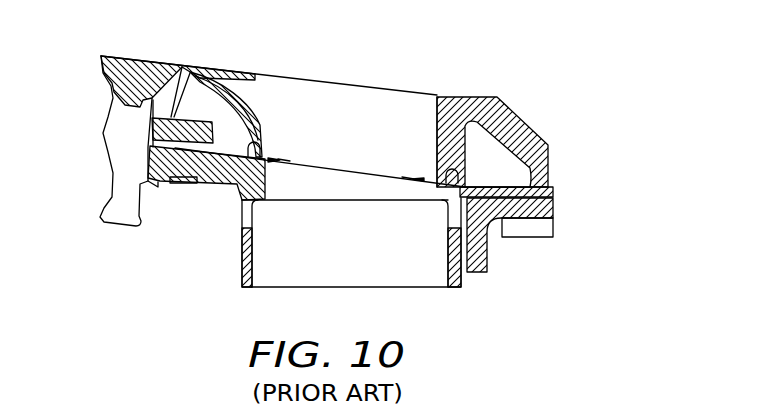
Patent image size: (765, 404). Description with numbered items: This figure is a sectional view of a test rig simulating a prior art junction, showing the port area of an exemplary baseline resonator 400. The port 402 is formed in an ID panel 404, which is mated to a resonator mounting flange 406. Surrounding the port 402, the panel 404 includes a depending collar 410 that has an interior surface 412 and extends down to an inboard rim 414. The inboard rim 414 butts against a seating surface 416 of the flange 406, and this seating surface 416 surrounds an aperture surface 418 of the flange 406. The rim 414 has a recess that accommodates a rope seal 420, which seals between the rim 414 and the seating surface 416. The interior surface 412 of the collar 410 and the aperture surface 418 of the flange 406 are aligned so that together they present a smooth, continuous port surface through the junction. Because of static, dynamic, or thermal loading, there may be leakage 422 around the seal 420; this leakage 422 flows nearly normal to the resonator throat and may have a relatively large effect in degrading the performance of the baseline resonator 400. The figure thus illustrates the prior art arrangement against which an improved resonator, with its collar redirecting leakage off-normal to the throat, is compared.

The baseline resonator 400 is at (372, 151).
The port 402 is at (378, 104).
The ID panel 404 is at (488, 169).
The resonator mounting flange 406 is at (237, 183).
The depending collar 410 is at (472, 155).
The interior surface 412 is at (437, 148).
The inboard rim 414 is at (220, 147).
The seating surface 416 is at (473, 175).
The aperture surface 418 is at (351, 187).
The rope seal 420 is at (266, 160).
The leakage 422 is at (279, 166).